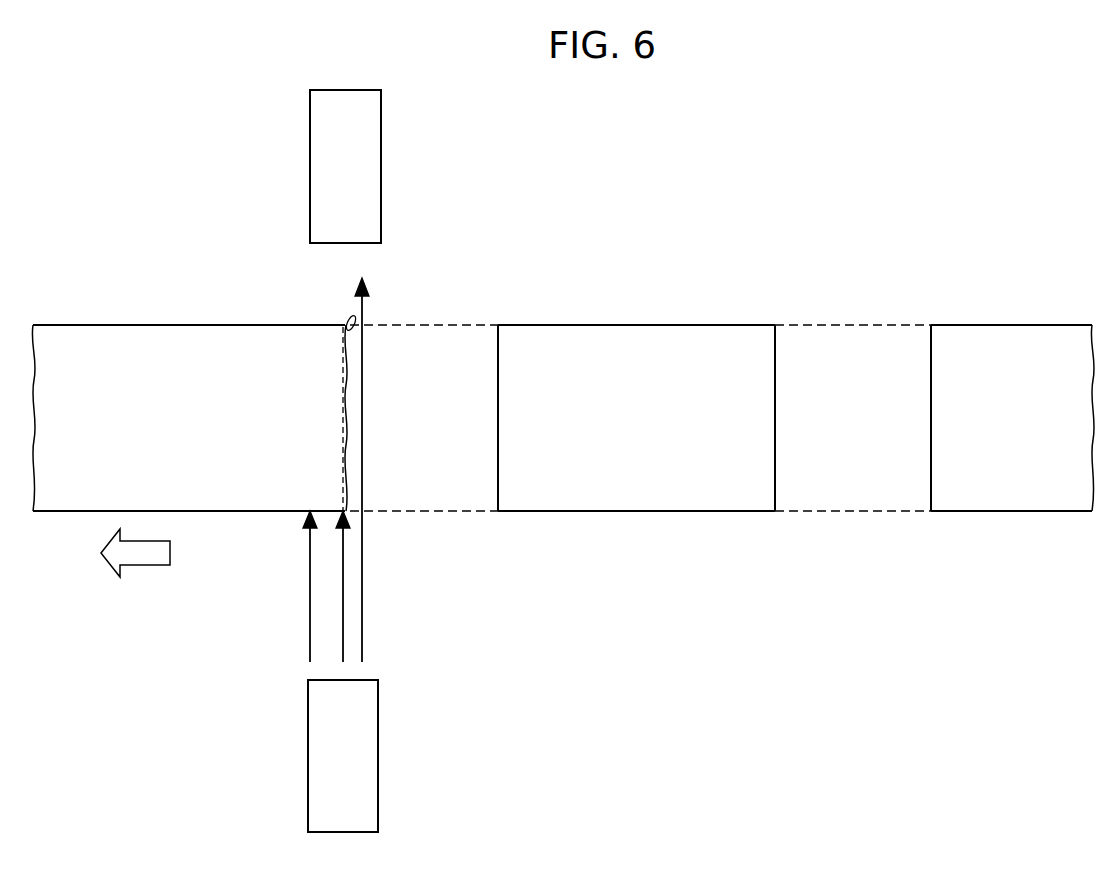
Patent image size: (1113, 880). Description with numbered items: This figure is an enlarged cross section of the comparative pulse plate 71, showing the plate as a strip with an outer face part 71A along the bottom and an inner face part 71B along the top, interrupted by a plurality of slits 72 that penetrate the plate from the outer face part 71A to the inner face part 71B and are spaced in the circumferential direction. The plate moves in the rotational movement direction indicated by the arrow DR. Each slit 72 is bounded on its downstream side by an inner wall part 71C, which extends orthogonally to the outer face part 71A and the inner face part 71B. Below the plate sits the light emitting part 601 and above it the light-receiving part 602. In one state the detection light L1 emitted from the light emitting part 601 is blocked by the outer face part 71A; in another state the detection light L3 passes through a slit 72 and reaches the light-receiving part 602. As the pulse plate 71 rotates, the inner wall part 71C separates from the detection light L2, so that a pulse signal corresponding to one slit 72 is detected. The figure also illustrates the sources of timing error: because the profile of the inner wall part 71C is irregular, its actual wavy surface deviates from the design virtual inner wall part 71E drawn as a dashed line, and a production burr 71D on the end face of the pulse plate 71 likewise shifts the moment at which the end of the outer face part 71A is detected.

The pulse plate 71 is at (1058, 302).
The outer face part 71A is at (218, 513).
The inner face part 71B is at (192, 325).
The inner wall part 71C is at (347, 461).
The burr 71D is at (348, 319).
The design virtual inner wall part 71E is at (343, 381).
The slit 72 is at (424, 382).
The light emitting part 601 is at (362, 772).
The light-receiving part 602 is at (366, 129).
The detection light (blocked state) L1 is at (309, 607).
The detection light (inner wall separation) L2 is at (343, 625).
The detection light (passing state) L3 is at (363, 597).
The rotational movement direction DR is at (143, 567).